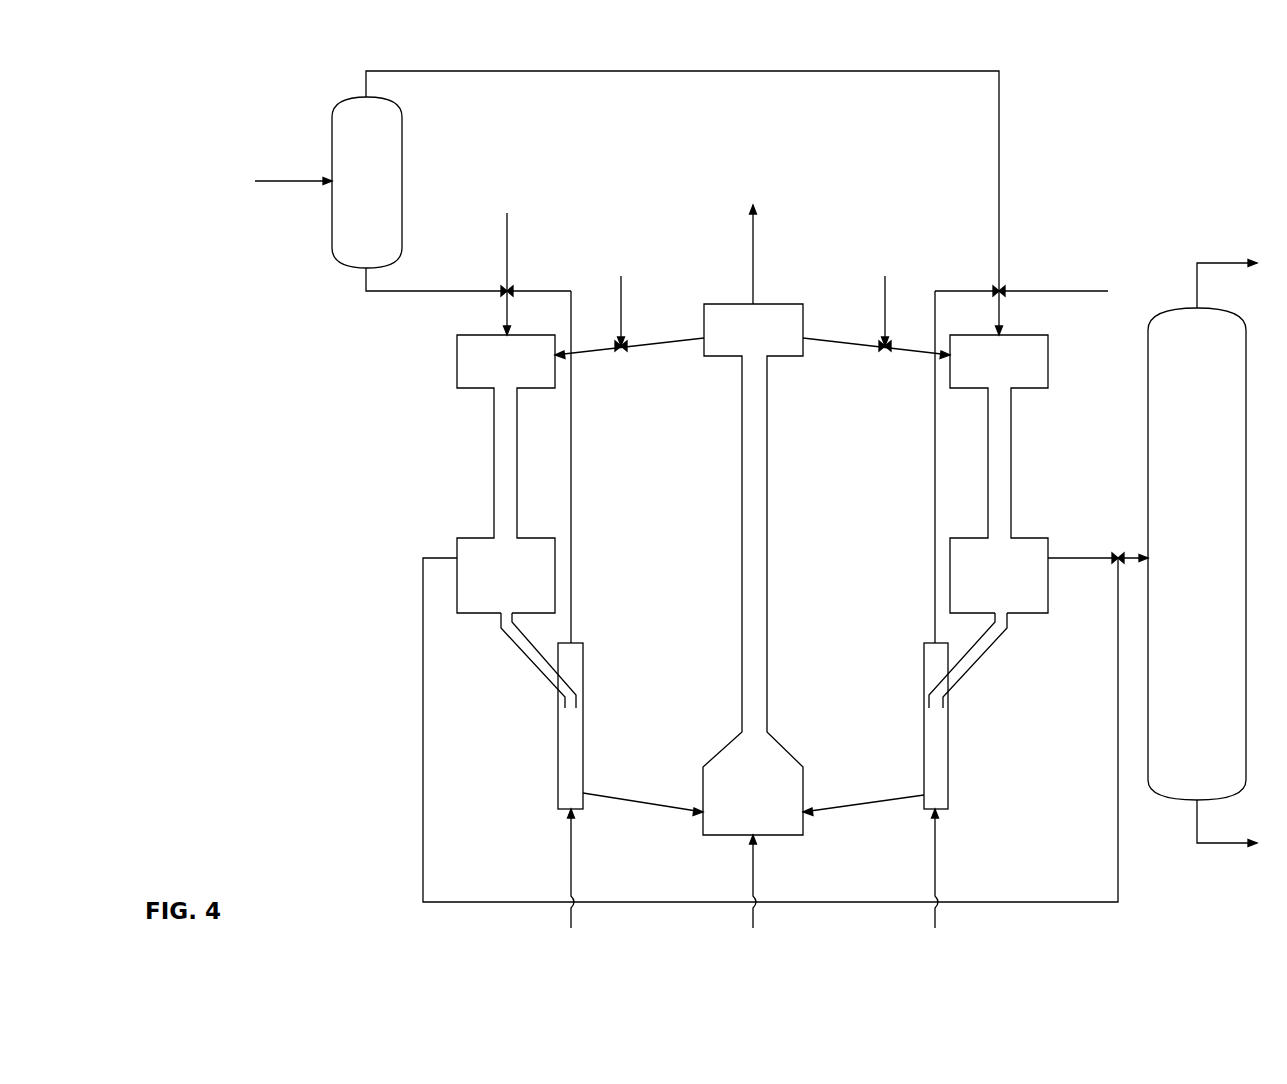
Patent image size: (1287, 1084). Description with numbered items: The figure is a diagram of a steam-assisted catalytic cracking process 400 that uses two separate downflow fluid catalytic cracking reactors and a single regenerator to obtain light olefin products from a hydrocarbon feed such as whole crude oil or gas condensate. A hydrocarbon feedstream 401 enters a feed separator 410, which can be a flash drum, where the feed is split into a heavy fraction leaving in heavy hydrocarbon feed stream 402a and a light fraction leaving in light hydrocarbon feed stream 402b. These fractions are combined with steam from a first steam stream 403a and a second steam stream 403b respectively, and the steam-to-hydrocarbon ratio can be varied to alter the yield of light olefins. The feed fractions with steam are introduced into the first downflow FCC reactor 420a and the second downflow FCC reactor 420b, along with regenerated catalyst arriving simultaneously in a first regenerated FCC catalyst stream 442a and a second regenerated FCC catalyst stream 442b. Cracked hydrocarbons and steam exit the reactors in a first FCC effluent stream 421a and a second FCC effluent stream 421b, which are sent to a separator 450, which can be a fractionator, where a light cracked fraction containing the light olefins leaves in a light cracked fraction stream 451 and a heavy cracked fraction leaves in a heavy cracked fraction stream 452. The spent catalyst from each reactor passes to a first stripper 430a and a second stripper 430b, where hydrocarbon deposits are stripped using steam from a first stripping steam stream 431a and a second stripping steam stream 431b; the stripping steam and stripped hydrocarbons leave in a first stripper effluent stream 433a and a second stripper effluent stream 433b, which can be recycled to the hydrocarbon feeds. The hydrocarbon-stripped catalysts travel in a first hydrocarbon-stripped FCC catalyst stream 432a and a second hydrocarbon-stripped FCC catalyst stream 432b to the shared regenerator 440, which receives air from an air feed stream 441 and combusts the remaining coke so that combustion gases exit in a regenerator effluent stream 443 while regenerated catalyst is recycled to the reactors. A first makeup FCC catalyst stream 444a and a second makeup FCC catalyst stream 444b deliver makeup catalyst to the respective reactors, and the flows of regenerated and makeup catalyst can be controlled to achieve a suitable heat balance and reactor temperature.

The steam-assisted catalytic cracking process 400 is at (1156, 119).
The hydrocarbon feedstream 401 is at (300, 181).
The heavy hydrocarbon feed stream 402a is at (449, 293).
The light hydrocarbon feed stream 402b is at (697, 72).
The first steam stream 403a is at (509, 249).
The second steam stream 403b is at (1045, 291).
The feed separator 410 is at (392, 196).
The first downflow FCC reactor 420a is at (494, 460).
The second downflow FCC reactor 420b is at (1012, 434).
The first FCC effluent stream 421a is at (423, 838).
The second FCC effluent stream 421b is at (1060, 558).
The first stripper 430a is at (558, 747).
The second stripper 430b is at (948, 745).
The first stripping steam stream 431a is at (571, 858).
The second stripping steam stream 431b is at (936, 858).
The first hydrocarbon-stripped FCC catalyst stream 432a is at (610, 795).
The second hydrocarbon-stripped FCC catalyst stream 432b is at (897, 797).
The first stripper effluent stream 433a is at (572, 503).
The second stripper effluent stream 433b is at (934, 500).
The regenerator 440 is at (780, 809).
The air feed stream 441 is at (753, 870).
The first regenerated FCC catalyst stream 442a is at (641, 350).
The second regenerated FCC catalyst stream 442b is at (857, 350).
The regenerator effluent stream 443 is at (753, 240).
The first makeup FCC catalyst stream 444a is at (622, 295).
The second makeup FCC catalyst stream 444b is at (884, 293).
The separator 450 is at (1222, 574).
The light cracked fraction stream 451 is at (1220, 263).
The heavy cracked fraction stream 452 is at (1227, 845).